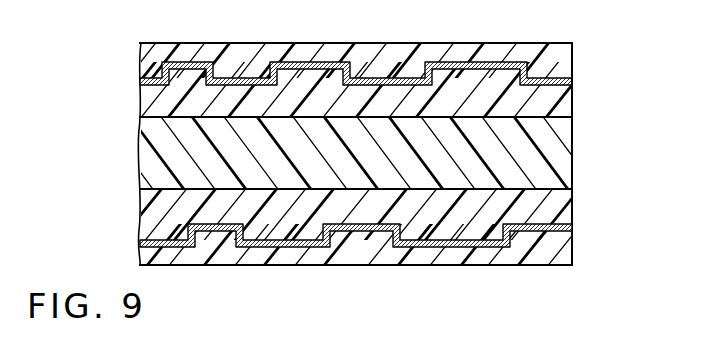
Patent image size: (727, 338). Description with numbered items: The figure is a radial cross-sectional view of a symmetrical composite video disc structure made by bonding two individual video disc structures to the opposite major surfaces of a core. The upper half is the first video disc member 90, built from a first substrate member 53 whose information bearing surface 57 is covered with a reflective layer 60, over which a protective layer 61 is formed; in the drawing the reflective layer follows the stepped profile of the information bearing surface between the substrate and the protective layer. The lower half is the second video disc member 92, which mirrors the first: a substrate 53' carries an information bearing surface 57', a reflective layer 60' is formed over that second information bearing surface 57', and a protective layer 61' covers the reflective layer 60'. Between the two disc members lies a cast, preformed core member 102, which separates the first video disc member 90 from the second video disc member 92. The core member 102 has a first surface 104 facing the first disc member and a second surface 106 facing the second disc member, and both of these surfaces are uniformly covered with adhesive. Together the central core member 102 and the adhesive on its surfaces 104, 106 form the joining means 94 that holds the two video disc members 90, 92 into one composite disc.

The first substrate member 53 is at (402, 87).
The information bearing surface 57 is at (370, 90).
The reflective layer 60 is at (388, 72).
The protective layer 61 is at (356, 61).
The first video disc member 90 is at (128, 43).
The second video disc member 92 is at (128, 188).
The joining means 94 is at (104, 161).
The core member 102 is at (573, 163).
The first surface 104 is at (573, 117).
The second surface 106 is at (573, 190).
The substrate 53' is at (380, 227).
The information bearing surface 57' is at (392, 214).
The reflective layer 60' is at (387, 243).
The protective layer 61' is at (377, 258).